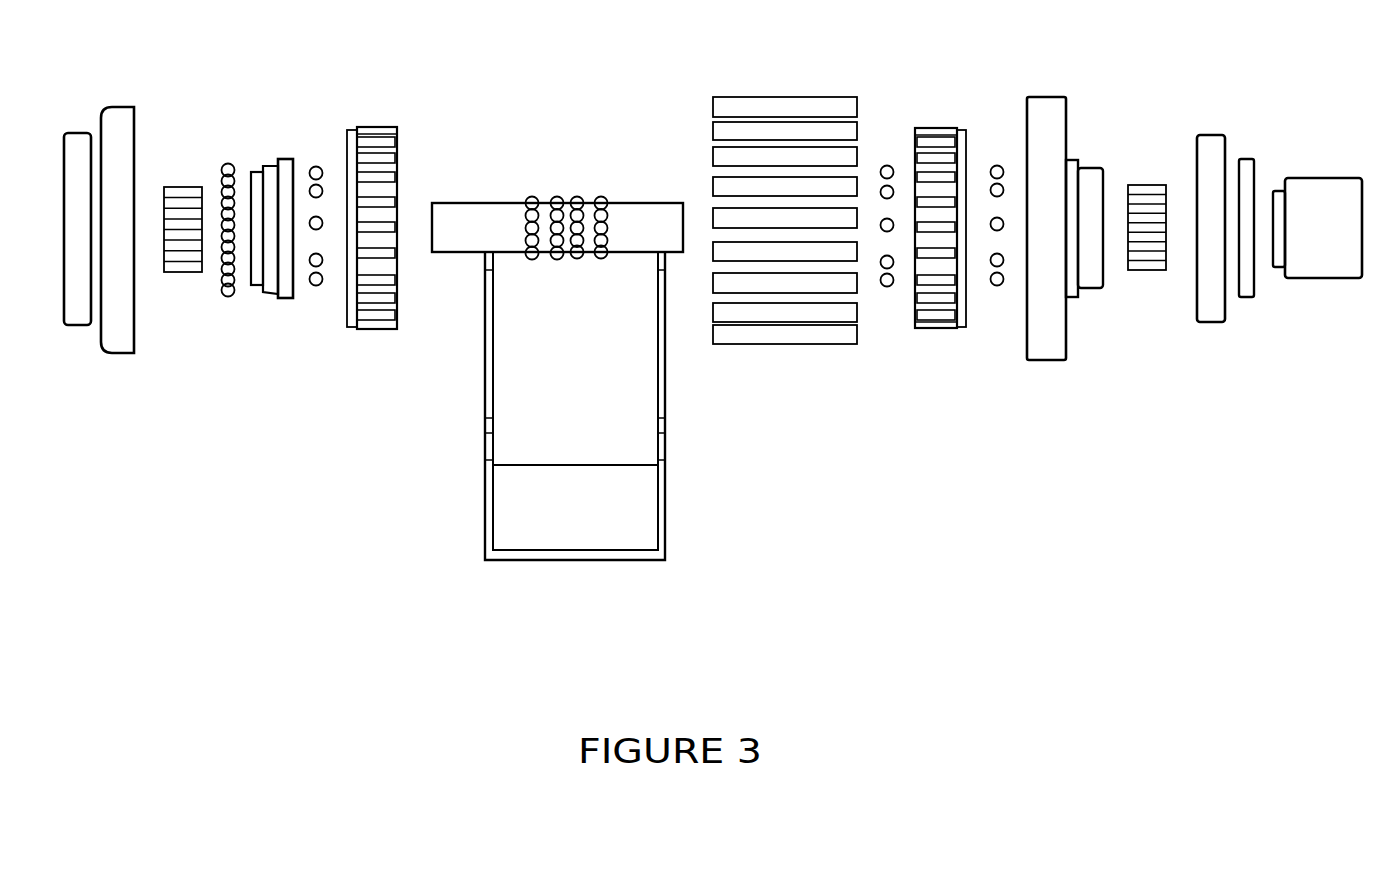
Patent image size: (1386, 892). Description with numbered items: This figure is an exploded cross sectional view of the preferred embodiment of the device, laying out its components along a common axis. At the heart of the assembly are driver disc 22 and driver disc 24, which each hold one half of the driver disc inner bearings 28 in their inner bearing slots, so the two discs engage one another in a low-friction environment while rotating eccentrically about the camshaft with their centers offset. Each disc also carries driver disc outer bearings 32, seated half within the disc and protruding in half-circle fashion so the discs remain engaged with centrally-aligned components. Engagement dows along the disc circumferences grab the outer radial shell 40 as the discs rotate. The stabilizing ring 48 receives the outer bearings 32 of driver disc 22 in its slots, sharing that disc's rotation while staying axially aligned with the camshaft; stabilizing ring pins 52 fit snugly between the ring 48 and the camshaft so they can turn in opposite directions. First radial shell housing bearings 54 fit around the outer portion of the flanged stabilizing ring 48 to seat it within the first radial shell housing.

The driver disc 22 is at (372, 142).
The driver disc 24 is at (943, 138).
The driver disc inner bearings 28 is at (887, 170).
The driver disc outer bearings 32 is at (317, 170).
The outer radial shell 40 is at (815, 54).
The stabilizing ring 48 is at (275, 173).
The stabilizing ring pins 52 is at (182, 192).
The first radial shell housing bearings 54 is at (227, 162).